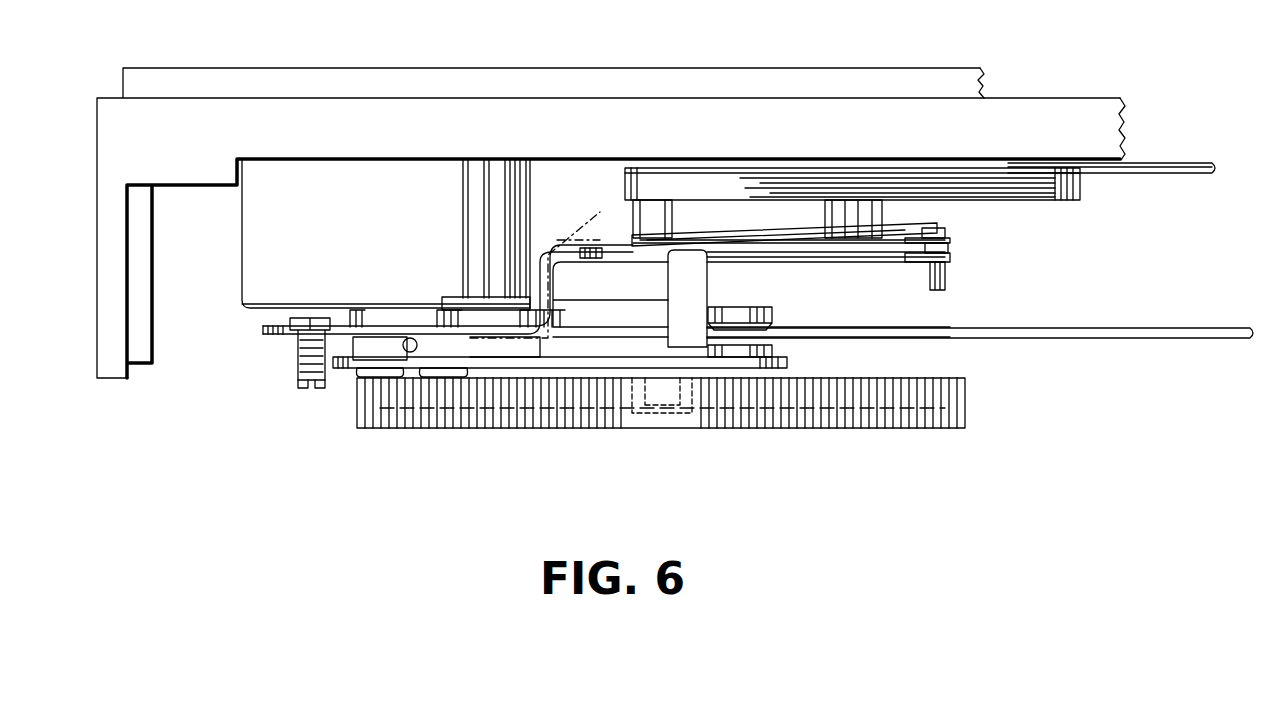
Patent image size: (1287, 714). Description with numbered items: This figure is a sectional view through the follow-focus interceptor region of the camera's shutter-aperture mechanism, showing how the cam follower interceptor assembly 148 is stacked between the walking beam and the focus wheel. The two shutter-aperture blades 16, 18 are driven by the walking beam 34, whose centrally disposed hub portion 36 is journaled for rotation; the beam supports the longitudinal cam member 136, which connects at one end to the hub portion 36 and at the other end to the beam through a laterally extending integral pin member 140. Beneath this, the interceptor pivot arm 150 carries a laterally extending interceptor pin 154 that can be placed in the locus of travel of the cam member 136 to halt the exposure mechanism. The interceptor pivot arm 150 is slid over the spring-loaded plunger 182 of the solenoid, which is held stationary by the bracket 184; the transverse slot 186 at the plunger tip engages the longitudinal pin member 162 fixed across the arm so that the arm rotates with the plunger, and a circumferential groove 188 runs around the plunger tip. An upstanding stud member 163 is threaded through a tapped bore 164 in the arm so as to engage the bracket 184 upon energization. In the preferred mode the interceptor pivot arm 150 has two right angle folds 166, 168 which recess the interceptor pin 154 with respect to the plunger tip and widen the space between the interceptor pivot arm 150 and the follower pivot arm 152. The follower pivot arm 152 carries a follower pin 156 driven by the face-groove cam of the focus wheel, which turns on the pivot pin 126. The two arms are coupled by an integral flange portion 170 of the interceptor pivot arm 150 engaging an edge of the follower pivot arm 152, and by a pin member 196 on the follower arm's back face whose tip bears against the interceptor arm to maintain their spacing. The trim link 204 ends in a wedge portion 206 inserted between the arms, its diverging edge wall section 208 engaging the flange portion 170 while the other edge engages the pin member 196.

The shutter-aperture blade 16 is at (1148, 166).
The shutter-aperture blade 18 is at (1178, 175).
The walking beam 34 is at (1010, 203).
The hub portion 36 is at (883, 217).
The pivot pin 126 is at (690, 392).
The longitudinal cam member 136 is at (935, 270).
The pin member 140 is at (650, 227).
The cam follower interceptor assembly 148 is at (600, 226).
The interceptor pivot arm 150 is at (560, 235).
The follower pivot arm 152 is at (532, 362).
The interceptor pin 154 is at (913, 278).
The follower pin 156 is at (637, 385).
The longitudinal pin member 162 is at (400, 340).
The upstanding stud member 163 is at (287, 365).
The tapped bore 164 is at (290, 357).
The right angle fold 166 is at (546, 340).
The right angle fold 168 is at (540, 255).
The flange portion 170 is at (680, 308).
The spring-loaded plunger 182 is at (397, 300).
The bracket 184 is at (375, 158).
The transverse slot 186 is at (408, 372).
The circumferential groove 188 is at (392, 342).
The pin member 196 is at (772, 312).
The trim link 204 is at (1145, 328).
The wedge portion 206 is at (568, 328).
The edge wall section 208 is at (637, 340).